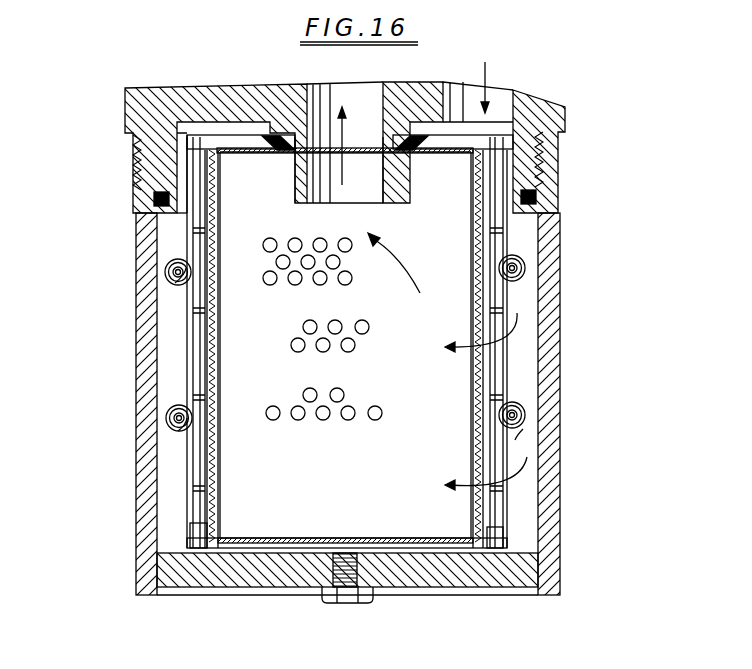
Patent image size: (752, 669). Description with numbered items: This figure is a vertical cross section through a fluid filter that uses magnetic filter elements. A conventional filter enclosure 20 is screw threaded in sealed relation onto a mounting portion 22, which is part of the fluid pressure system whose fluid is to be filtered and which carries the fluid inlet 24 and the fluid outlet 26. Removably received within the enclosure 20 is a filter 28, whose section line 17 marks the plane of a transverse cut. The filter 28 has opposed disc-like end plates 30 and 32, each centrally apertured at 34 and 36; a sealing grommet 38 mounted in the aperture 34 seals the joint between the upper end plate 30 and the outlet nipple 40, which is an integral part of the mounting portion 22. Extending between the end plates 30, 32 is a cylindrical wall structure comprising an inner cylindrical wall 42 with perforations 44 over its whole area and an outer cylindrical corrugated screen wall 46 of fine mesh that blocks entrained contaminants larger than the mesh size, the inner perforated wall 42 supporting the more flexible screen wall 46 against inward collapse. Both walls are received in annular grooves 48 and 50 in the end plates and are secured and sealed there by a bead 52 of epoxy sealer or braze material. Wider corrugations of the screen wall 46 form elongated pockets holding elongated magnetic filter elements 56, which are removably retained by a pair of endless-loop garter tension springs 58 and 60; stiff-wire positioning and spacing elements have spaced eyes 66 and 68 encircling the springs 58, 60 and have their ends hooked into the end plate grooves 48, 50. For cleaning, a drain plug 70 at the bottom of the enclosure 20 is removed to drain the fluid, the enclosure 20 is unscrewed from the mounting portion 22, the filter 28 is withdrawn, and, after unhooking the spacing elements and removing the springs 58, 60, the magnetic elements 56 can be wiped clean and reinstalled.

The section line 17- 17 is at (205, 397).
The filter enclosure 20 is at (562, 239).
The mounting portion 22 is at (553, 107).
The fluid inlet 24 is at (505, 92).
The fluid outlet 26 is at (372, 90).
The filter 28 is at (188, 238).
The end plate 30 is at (455, 152).
The end plate 32 is at (285, 538).
The aperture 34 is at (280, 155).
The aperture 36 is at (372, 538).
The sealing grommet 38 is at (407, 160).
The outlet nipple 40 is at (305, 202).
The perforated tube 42 is at (221, 469).
The perforations 44 is at (296, 286).
The corrugated screen wall 46 is at (477, 241).
The annular groove 48 is at (490, 542).
The annular groove 50 is at (205, 145).
The bead 52 is at (200, 528).
The magnetic filter element 56 is at (185, 490).
The tension spring 58 is at (175, 283).
The tension spring 60 is at (178, 431).
The eye 66 is at (165, 276).
The eye 68 is at (166, 418).
The drain plug 70 is at (343, 598).